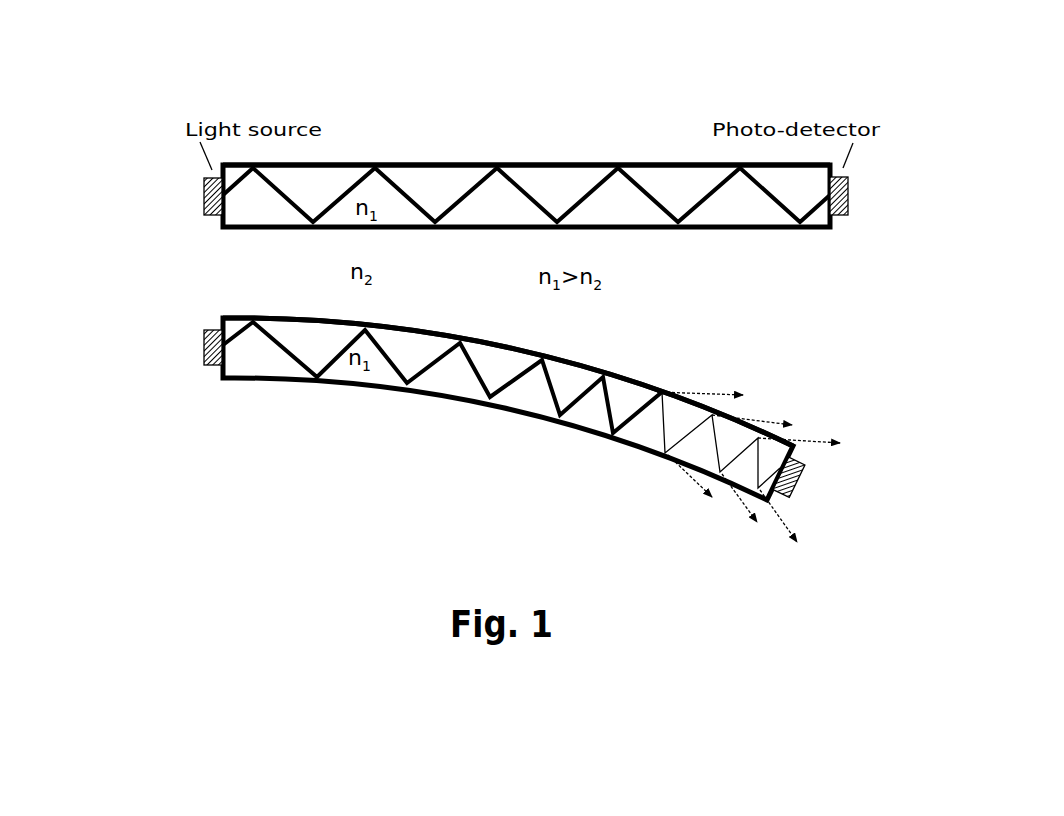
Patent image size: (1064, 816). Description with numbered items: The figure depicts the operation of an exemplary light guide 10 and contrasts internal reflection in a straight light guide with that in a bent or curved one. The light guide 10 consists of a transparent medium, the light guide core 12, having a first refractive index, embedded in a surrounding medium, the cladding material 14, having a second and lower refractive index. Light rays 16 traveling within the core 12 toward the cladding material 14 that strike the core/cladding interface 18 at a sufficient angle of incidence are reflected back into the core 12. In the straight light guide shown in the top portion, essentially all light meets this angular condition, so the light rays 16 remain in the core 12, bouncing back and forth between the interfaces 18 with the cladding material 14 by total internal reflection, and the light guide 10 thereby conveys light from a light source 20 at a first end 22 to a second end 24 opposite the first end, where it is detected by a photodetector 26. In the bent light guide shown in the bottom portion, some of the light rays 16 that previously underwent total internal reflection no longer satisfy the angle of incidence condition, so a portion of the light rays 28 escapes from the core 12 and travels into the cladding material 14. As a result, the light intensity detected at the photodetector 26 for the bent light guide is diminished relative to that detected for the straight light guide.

The light guide 10 is at (962, 321).
The light guide core 12 is at (337, 186).
The light guide cladding material 14 is at (207, 440).
The light rays 16 is at (395, 186).
The core/cladding interface 18 is at (522, 165).
The light source 20 is at (205, 193).
The first end 22 is at (223, 227).
The second end 24 is at (833, 228).
The photodetector 26 is at (849, 196).
The escaping light rays 28 is at (726, 392).